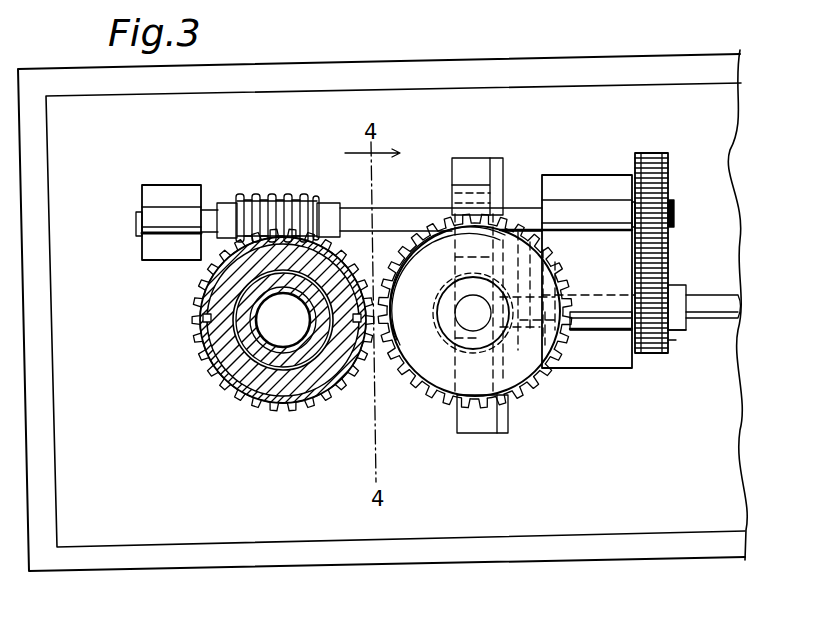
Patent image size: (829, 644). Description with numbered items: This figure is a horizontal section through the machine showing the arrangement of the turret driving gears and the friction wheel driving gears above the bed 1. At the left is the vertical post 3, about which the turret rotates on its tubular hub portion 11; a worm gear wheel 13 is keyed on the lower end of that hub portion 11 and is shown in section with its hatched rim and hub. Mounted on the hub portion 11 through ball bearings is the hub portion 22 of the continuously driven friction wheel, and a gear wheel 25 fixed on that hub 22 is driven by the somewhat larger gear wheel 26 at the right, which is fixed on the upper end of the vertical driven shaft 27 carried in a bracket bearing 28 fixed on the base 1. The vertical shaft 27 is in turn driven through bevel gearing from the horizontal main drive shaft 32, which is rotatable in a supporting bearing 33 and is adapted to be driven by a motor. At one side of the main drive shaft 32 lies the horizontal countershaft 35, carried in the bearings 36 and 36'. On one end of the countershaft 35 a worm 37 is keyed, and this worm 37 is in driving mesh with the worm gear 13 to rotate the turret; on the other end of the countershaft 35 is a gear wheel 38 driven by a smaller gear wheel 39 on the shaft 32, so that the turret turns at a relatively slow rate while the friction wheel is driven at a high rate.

The bed 1 is at (620, 518).
The post 3 is at (262, 363).
The hub portion 11 is at (296, 366).
The worm gear wheel 13 is at (196, 288).
The hub portion 22 is at (228, 373).
The gear wheel 25 is at (197, 331).
The gear wheel 26 is at (433, 398).
The vertical driven shaft 27 is at (466, 324).
The bracket bearing 28 is at (450, 313).
The horizontal shaft 32 is at (702, 306).
The supporting bearing 33 is at (602, 336).
The countershaft 35 is at (403, 214).
The bearing 36 is at (588, 248).
The bearing 36' is at (163, 206).
The worm 37 is at (278, 194).
The gear wheel 38 is at (664, 169).
The gear wheel 39 is at (665, 352).